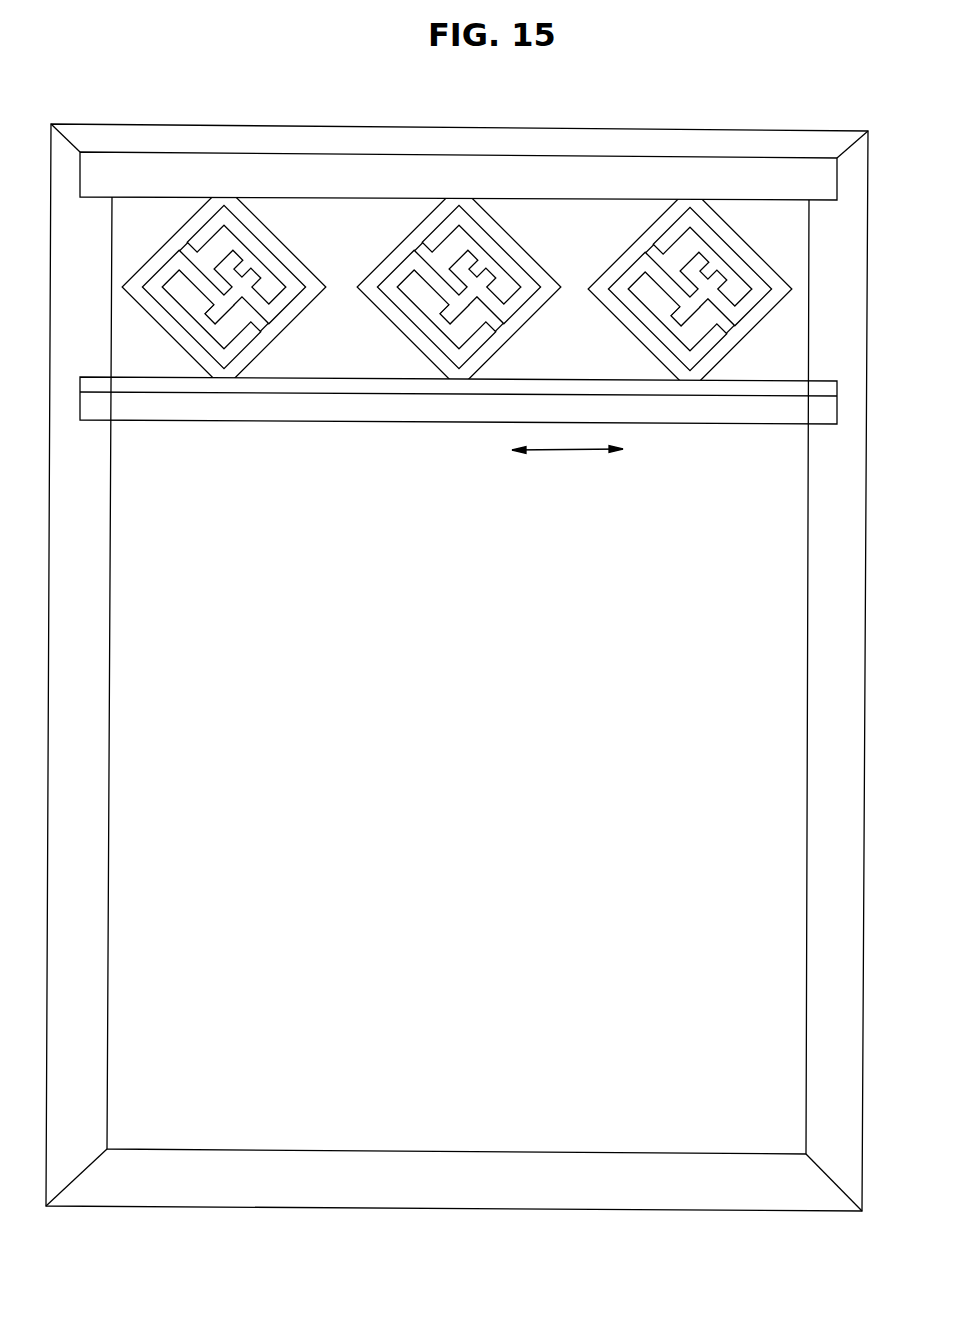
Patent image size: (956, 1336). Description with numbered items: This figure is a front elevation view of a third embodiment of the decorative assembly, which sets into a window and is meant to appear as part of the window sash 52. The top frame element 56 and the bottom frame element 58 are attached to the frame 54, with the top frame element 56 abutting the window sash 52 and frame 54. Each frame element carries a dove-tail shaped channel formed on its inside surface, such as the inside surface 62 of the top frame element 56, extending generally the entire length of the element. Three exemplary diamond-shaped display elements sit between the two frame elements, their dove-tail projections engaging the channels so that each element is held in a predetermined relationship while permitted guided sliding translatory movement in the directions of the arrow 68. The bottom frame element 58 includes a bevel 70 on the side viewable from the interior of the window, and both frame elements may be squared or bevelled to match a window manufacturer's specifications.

The window sash 52 is at (708, 520).
The frame 54 is at (106, 765).
The top frame element 56 is at (527, 168).
The bottom frame element 58 is at (411, 410).
The inside surface 62 is at (317, 199).
The arrow 68 is at (560, 450).
The bevel 70 is at (275, 413).